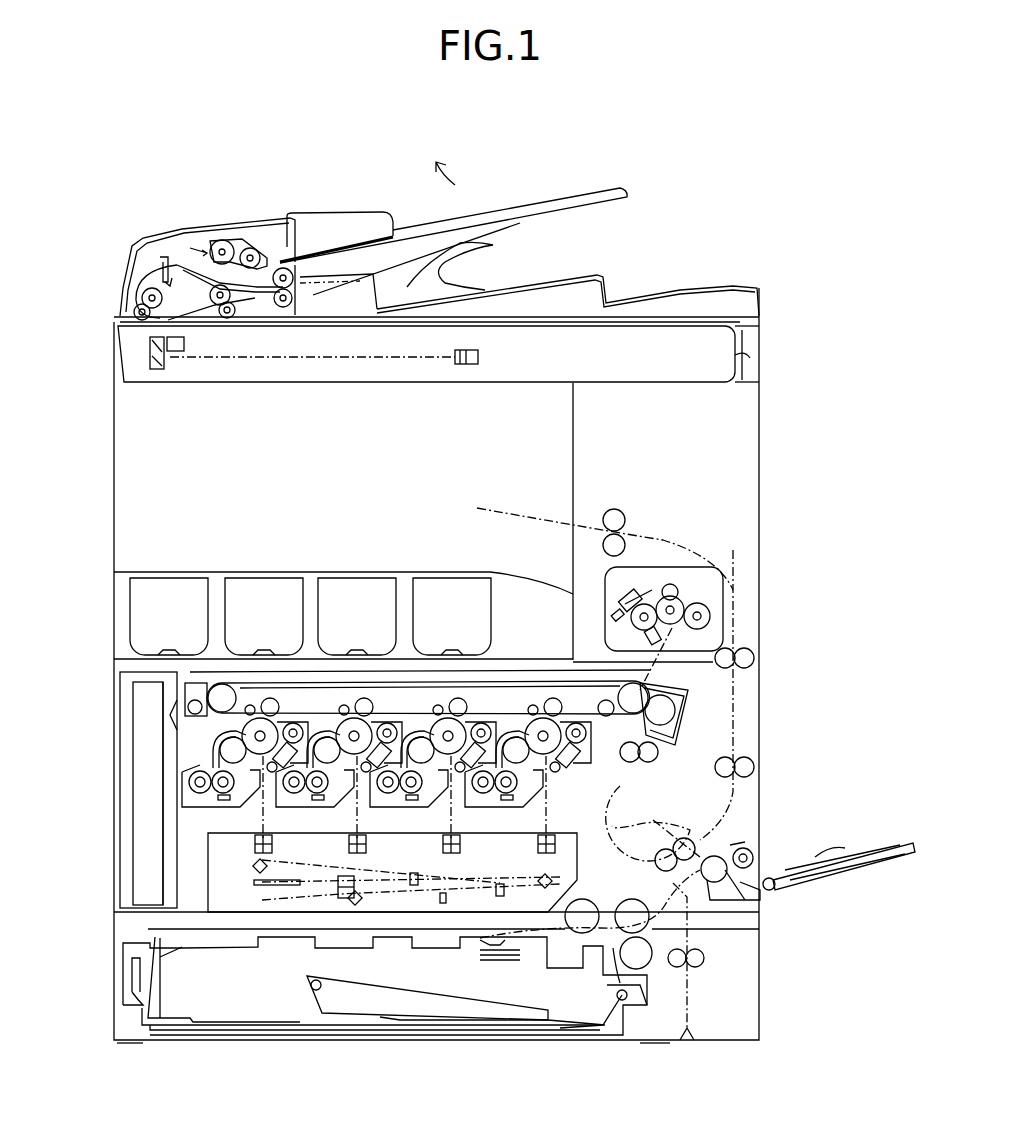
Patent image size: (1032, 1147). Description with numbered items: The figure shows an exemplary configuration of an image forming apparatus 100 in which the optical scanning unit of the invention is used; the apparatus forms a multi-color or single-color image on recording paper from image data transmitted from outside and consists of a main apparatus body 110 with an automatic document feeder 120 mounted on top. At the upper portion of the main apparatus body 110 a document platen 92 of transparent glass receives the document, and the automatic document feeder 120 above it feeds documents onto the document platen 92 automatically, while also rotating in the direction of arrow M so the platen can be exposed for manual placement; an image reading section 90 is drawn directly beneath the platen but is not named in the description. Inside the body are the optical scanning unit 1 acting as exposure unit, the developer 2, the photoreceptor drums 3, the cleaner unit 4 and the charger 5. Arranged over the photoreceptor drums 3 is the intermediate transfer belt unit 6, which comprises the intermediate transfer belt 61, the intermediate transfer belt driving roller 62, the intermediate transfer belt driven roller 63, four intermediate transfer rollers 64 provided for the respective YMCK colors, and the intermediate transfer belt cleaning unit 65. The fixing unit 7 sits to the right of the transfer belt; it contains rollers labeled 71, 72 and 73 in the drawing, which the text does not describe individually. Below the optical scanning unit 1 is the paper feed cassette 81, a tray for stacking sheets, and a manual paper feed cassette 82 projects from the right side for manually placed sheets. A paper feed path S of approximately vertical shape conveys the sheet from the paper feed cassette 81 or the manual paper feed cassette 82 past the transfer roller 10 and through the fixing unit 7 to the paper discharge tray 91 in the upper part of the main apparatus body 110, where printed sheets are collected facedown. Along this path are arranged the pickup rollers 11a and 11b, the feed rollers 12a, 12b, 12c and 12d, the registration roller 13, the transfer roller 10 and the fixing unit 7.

The image forming apparatus 100 is at (775, 257).
The main apparatus body 110 is at (100, 518).
The automatic document feeder 120 is at (218, 211).
The image reading unit 90 is at (738, 358).
The paper discharge tray 91 is at (378, 572).
The document platen 92 is at (512, 317).
The optical scanning unit 1 is at (580, 857).
The developer 2 is at (228, 750).
The photoreceptor drums 3 is at (260, 720).
The cleaner unit 4 is at (302, 726).
The charger 5 is at (260, 796).
The intermediate transfer belt unit 6 is at (520, 671).
The intermediate transfer belt 61 is at (545, 680).
The intermediate transfer belt driving roller 62 is at (655, 692).
The intermediate transfer belt driven roller 63 is at (230, 690).
The intermediate transfer roller 64 is at (278, 705).
The intermediate transfer belt cleaning unit 65 is at (197, 683).
The fixing unit 7 is at (725, 591).
The fixing roller 71 is at (672, 605).
The pressure roller 72 is at (701, 617).
The heating roller 73 is at (654, 608).
The transfer roller 10 is at (670, 712).
The pickup roller 11a is at (595, 912).
The pickup roller 11b is at (752, 852).
The feed roller 12a is at (690, 848).
The feed roller 12b is at (614, 510).
The feed roller 12c is at (748, 658).
The feed roller 12d is at (748, 767).
The registration roller 13 is at (652, 752).
The paper feed cassette 81 is at (378, 990).
The manual paper feed cassette 82 is at (856, 845).
The paper feed path S is at (605, 774).